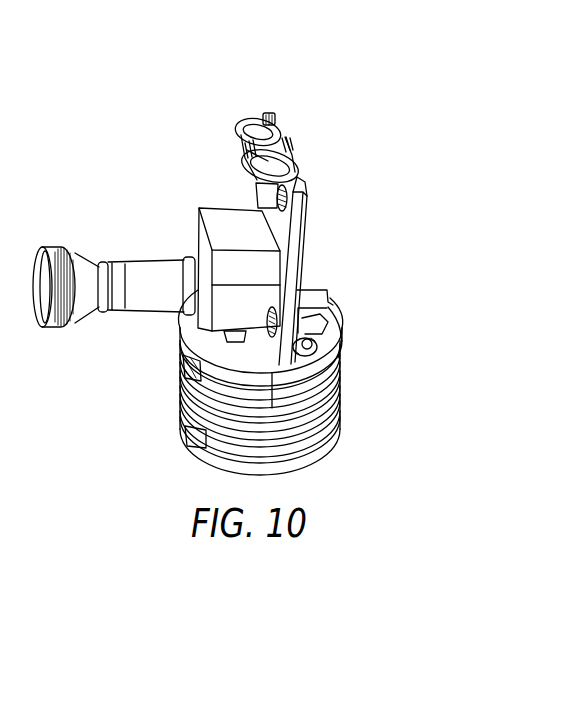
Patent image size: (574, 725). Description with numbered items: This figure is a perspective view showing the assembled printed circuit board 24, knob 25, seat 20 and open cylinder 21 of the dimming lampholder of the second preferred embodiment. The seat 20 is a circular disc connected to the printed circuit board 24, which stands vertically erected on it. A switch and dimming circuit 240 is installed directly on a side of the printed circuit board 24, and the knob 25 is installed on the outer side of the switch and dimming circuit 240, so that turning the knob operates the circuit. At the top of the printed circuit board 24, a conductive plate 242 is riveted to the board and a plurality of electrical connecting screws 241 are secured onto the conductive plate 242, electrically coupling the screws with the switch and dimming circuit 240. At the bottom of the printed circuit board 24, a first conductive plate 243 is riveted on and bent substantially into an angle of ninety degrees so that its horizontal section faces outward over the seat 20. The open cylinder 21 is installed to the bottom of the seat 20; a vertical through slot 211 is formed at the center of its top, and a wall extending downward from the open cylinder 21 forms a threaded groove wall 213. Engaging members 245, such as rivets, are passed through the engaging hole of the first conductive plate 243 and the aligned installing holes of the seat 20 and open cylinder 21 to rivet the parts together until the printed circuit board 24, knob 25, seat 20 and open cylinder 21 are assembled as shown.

The seat 20 is at (328, 335).
The open cylinder 21 is at (320, 382).
The vertical through slot 211 is at (185, 370).
The threaded groove wall 213 is at (327, 438).
The printed circuit board 24 is at (302, 230).
The switch and dimming circuit 240 is at (222, 227).
The electrical connecting screws 241 is at (252, 120).
The conductive plate 242 is at (235, 140).
The first conductive plate 243 is at (323, 349).
The engaging member 245 is at (310, 336).
The knob 25 is at (82, 252).